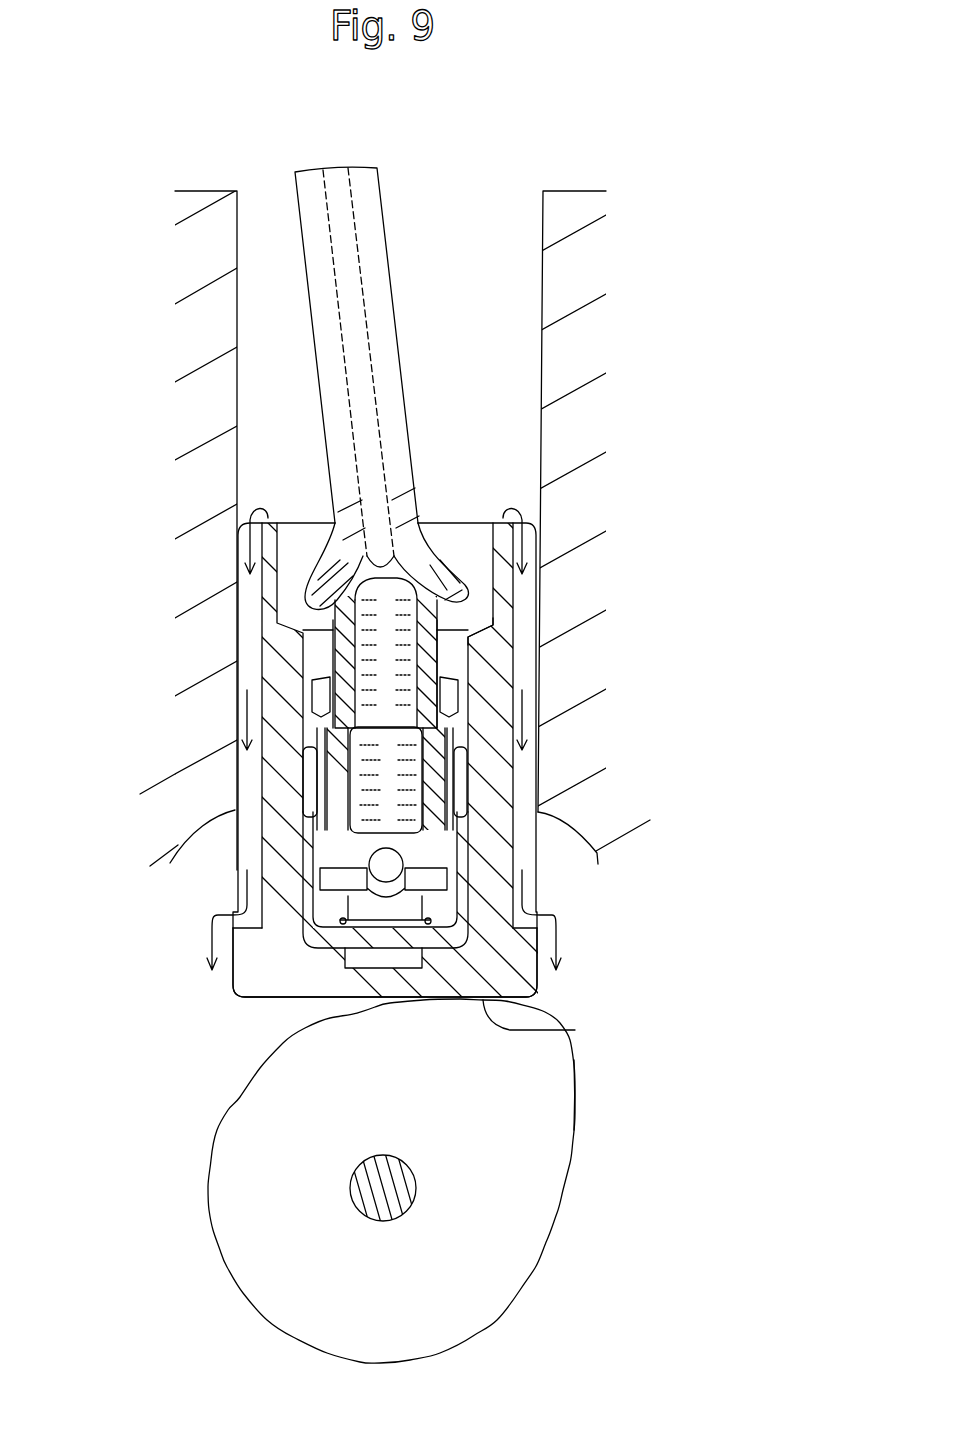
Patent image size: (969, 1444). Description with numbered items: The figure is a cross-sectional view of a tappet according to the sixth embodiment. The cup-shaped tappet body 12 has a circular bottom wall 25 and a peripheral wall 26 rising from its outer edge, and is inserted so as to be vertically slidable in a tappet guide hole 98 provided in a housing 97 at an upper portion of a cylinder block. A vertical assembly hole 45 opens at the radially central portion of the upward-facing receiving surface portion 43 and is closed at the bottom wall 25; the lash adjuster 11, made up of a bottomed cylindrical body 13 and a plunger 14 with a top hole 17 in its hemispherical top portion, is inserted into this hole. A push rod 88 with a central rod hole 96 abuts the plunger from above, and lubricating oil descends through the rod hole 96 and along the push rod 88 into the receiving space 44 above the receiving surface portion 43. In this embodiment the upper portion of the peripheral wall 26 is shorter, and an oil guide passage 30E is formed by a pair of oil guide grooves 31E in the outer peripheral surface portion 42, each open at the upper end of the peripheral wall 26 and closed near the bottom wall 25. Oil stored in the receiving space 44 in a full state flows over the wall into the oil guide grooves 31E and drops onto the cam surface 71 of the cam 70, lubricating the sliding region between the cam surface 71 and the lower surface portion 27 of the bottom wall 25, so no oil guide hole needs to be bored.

The tappet guide hole 98 is at (238, 228).
The housing 97 is at (575, 193).
The push rod 88 is at (378, 199).
The rod hole 96 is at (405, 448).
The receiving space 44 is at (299, 536).
The tappet body 12 is at (540, 522).
The peripheral wall 26 is at (513, 552).
The receiving surface portion 43 is at (485, 625).
The oil guide groove 31E is at (237, 578).
The oil guide passage 30E is at (513, 670).
The top hole 17 is at (345, 606).
The lash adjuster 11 is at (106, 648).
The plunger 14 is at (333, 652).
The body 13 is at (310, 732).
The assembly hole 45 is at (305, 800).
The outer peripheral surface portion 42 is at (235, 800).
The bottom wall 25 is at (265, 990).
The lower surface portion 27 is at (563, 1030).
The cam surface 71 is at (577, 1082).
The cam 70 is at (568, 1128).